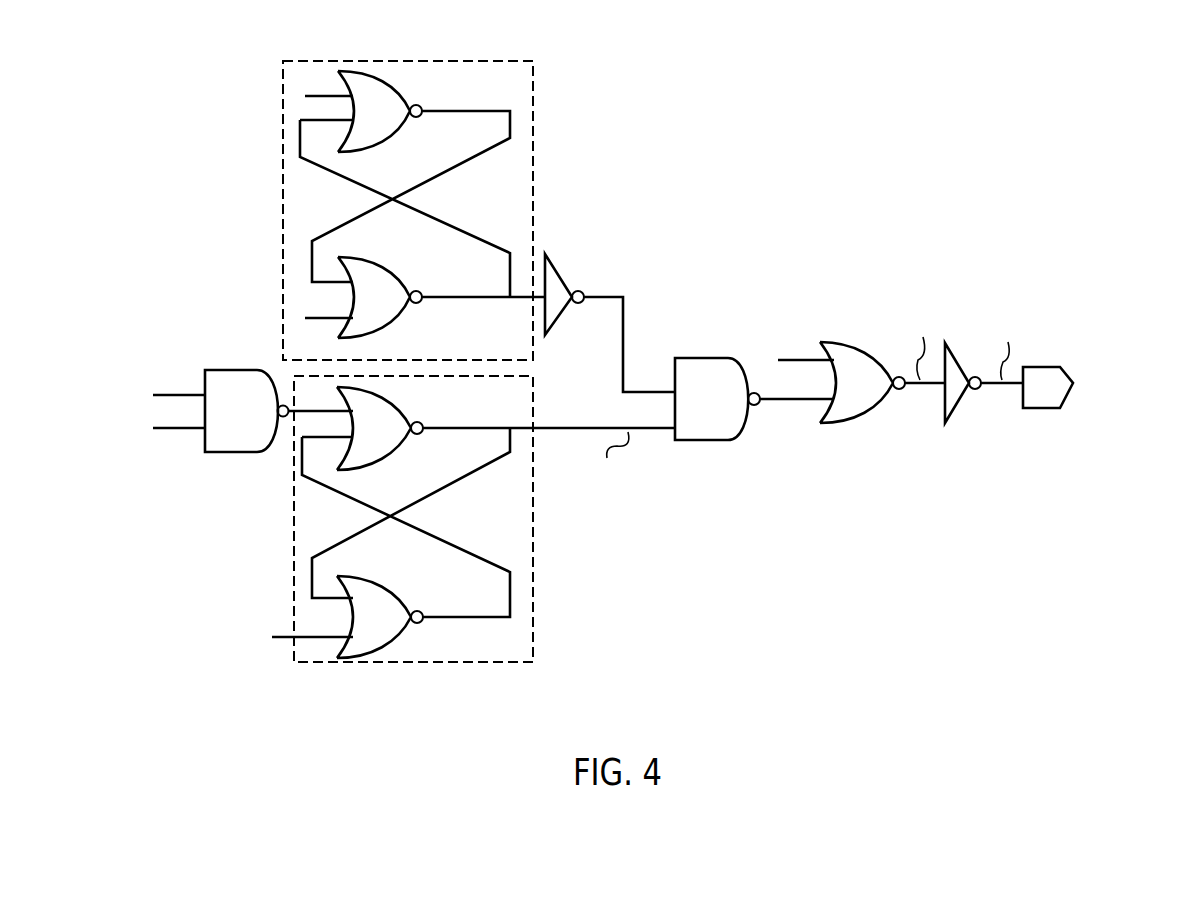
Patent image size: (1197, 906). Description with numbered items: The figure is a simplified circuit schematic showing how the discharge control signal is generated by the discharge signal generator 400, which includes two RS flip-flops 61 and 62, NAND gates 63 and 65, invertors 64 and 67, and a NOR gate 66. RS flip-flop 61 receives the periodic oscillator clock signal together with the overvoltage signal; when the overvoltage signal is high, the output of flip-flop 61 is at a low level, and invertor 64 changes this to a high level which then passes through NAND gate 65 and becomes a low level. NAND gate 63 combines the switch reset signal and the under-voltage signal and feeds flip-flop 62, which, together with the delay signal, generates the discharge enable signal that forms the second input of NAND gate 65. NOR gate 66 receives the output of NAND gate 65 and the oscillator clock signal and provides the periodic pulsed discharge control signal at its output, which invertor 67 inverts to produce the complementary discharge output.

The DISCHARGE signal generator 400 is at (745, 66).
The RS flip-flop 61 is at (312, 194).
The RS flip-flop 62 is at (518, 530).
The NAND gate 63 is at (248, 465).
The invertor 64 is at (562, 317).
The NAND gate 65 is at (720, 447).
The NOR gate 66 is at (850, 437).
The invertor 67 is at (952, 437).